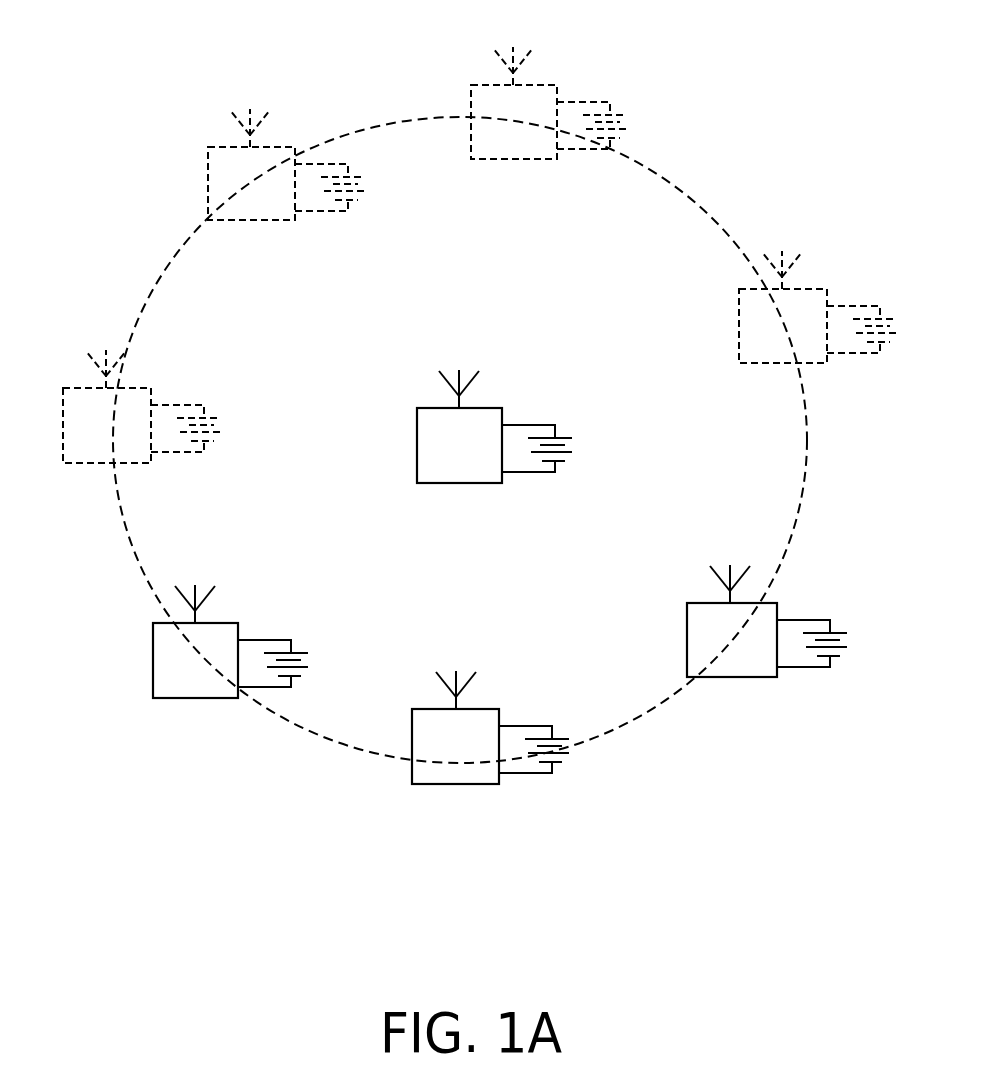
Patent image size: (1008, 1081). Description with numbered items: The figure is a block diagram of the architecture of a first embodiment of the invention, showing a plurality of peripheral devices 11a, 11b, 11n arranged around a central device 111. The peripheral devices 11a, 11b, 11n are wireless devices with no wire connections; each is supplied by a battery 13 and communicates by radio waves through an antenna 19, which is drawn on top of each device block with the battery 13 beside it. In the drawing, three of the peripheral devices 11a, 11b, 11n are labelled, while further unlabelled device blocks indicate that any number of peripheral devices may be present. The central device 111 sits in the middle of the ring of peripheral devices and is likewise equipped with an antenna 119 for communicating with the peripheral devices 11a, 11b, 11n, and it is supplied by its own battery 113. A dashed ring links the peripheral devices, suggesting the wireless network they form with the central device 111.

The battery 13 is at (340, 663).
The central device 111 is at (436, 454).
The antenna 119 is at (483, 383).
The battery 113 is at (577, 471).
The peripheral device 11a is at (430, 756).
The peripheral device 11b is at (170, 670).
The peripheral device 11n is at (703, 650).
The antenna 19 is at (195, 577).